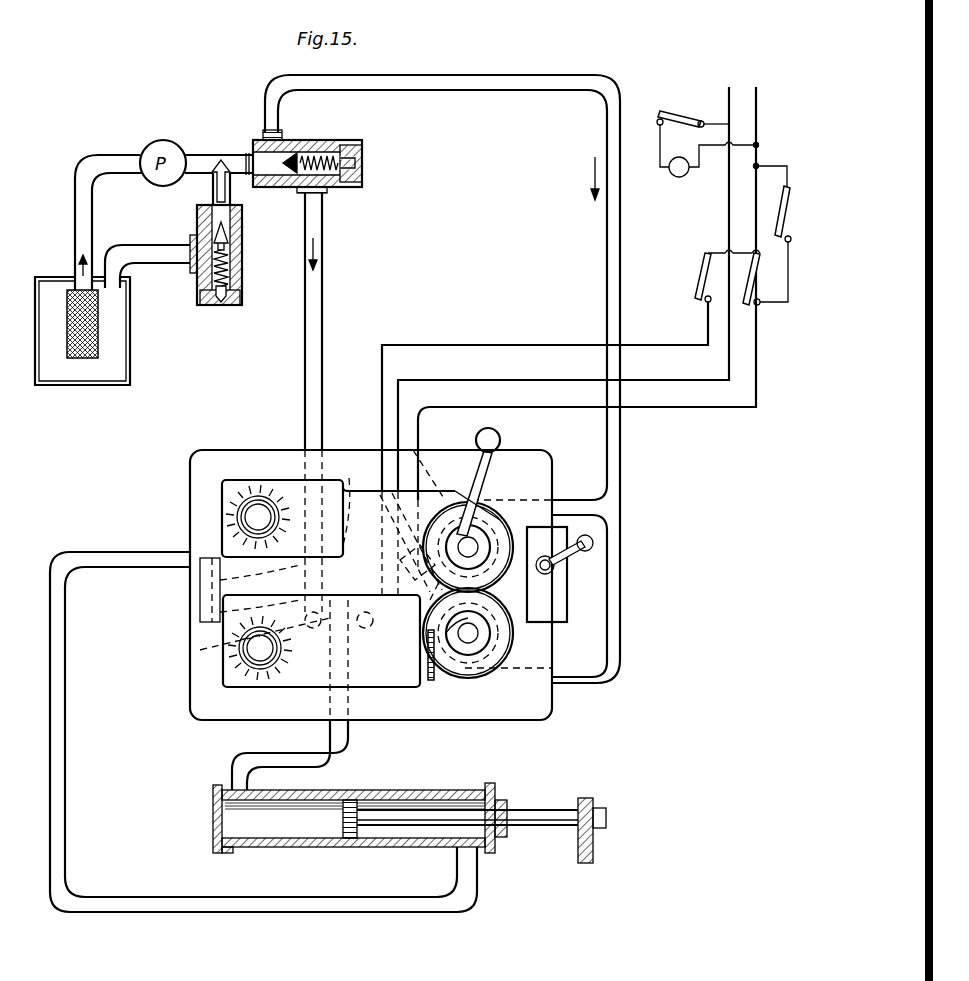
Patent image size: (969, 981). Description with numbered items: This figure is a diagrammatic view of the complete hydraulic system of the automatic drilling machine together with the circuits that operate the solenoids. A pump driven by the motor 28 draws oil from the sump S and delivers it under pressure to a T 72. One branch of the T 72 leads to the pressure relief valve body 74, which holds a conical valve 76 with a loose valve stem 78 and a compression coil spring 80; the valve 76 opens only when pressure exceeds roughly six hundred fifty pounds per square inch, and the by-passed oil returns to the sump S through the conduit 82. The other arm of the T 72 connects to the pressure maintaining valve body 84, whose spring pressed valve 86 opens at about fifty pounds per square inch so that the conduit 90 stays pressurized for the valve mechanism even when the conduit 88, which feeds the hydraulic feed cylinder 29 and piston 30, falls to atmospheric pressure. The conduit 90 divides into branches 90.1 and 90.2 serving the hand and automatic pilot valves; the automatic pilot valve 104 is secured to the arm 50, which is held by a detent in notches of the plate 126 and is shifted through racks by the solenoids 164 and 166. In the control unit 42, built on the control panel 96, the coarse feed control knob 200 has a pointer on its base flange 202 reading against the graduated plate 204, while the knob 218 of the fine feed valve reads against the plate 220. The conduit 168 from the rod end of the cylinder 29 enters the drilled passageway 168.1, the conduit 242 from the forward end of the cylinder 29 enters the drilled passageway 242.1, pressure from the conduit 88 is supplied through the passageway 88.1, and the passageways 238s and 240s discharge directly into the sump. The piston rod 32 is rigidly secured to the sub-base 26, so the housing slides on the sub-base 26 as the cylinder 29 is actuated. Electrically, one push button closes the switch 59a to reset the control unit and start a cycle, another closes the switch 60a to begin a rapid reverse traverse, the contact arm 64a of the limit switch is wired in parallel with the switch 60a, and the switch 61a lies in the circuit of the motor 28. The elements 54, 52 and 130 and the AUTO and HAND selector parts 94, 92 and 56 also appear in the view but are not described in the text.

The hydraulic reservoir or sump S is at (122, 356).
The T 72 is at (229, 157).
The conical valve 76 is at (243, 229).
The pressure relief valve body 74 is at (243, 246).
The loose valve stem 78 is at (230, 266).
The compression coil spring 80 is at (226, 275).
The conduit 82 is at (160, 264).
The pressure maintaining valve body 84 is at (292, 143).
The spring pressed valve 86 is at (307, 153).
The conduit 88 is at (322, 229).
The conduit 90 is at (606, 282).
The branch of conduit 90 90.1 is at (593, 492).
The branch of conduit 90 90.2 is at (577, 680).
The switch 61a is at (697, 104).
The motor 28 is at (679, 178).
The contact arm 64a is at (777, 223).
The switch 59a is at (702, 263).
The switch 60a is at (745, 288).
The control unit 42 is at (263, 446).
The control knob 200 is at (238, 507).
The base flange 202 is at (232, 517).
The plate 204 is at (232, 537).
The plate 220 is at (320, 680).
The control knob 218 is at (243, 658).
The drilled passageway 168.1 is at (222, 588).
The passageway 88.1 is at (228, 614).
The passageway 238s is at (232, 638).
The passageway 240s is at (368, 611).
The drilled passageway 242.1 is at (348, 476).
The solenoid 166 is at (402, 603).
The upper gear 54 is at (482, 481).
The solenoid 164 is at (440, 480).
The arm 50 is at (507, 658).
The pawl 52 is at (428, 669).
The control panel 96 is at (518, 577).
The automatic pilot valve 104 is at (515, 594).
The link 130 is at (497, 531).
The selector plate 94 is at (563, 604).
The selector knob 92 is at (549, 575).
The selector lever 56 is at (562, 561).
The plate 126 is at (508, 631).
The conduit 242 is at (346, 749).
The conduit 168 is at (331, 904).
The piston 30 is at (352, 805).
The hydraulic feed cylinder 29 is at (399, 790).
The piston rod 32 is at (535, 812).
The sub-base 26 is at (592, 800).